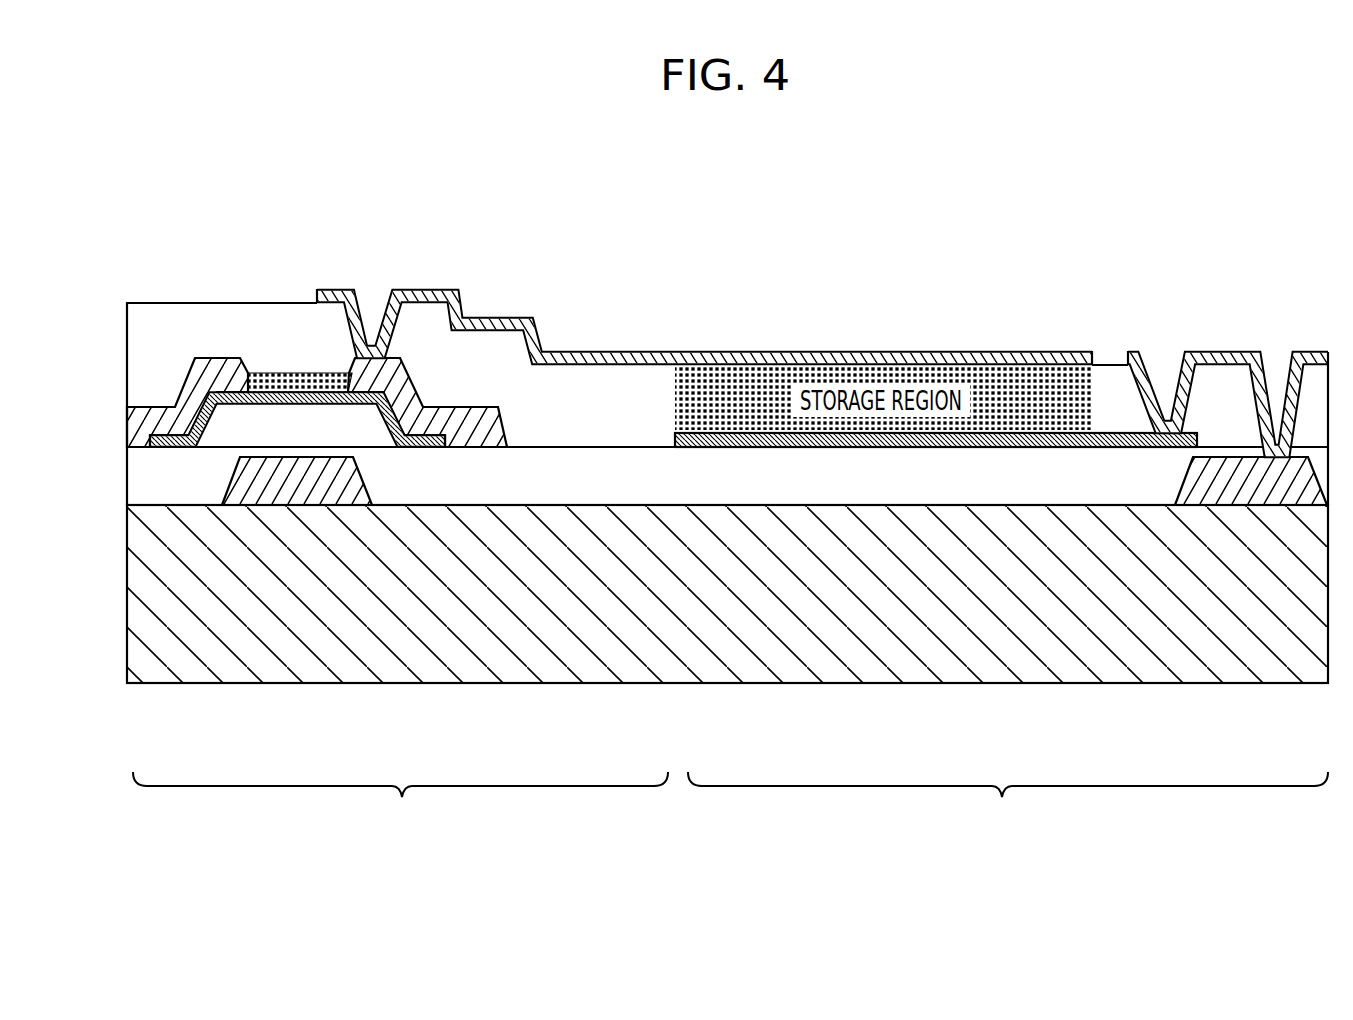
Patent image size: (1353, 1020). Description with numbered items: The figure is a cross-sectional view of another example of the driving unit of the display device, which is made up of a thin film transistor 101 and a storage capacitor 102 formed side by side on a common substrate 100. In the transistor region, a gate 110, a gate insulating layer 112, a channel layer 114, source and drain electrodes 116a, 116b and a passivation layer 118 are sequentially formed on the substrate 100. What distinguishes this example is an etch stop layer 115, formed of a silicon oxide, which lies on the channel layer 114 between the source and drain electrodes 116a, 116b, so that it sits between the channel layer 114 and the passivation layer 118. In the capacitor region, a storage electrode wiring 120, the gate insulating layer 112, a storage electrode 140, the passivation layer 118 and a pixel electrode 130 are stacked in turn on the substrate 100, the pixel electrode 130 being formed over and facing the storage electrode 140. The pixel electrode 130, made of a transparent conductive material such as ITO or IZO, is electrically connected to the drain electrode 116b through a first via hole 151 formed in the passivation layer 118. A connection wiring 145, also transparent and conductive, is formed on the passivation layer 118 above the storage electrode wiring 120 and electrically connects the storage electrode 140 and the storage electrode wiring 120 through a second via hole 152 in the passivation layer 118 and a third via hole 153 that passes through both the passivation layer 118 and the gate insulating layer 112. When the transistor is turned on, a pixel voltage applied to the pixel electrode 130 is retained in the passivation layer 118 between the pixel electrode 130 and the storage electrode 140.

The substrate 100 is at (720, 652).
The thin film transistor 101 is at (400, 804).
The storage capacitor 102 is at (1008, 804).
The gate 110 is at (290, 488).
The gate insulating layer 112 is at (137, 478).
The channel layer 114 is at (312, 395).
The etch stop layer 115 is at (268, 372).
The source electrode 116a is at (208, 378).
The drain electrode 116b is at (492, 407).
The passivation layer 118 is at (137, 358).
The storage electrode wiring 120 is at (1243, 490).
The pixel electrode 130 is at (704, 291).
The storage electrode 140 is at (988, 447).
The connection wiring 145 is at (1232, 354).
The first via hole 151 is at (400, 335).
The second via hole 152 is at (1195, 392).
The third via hole 153 is at (1300, 392).